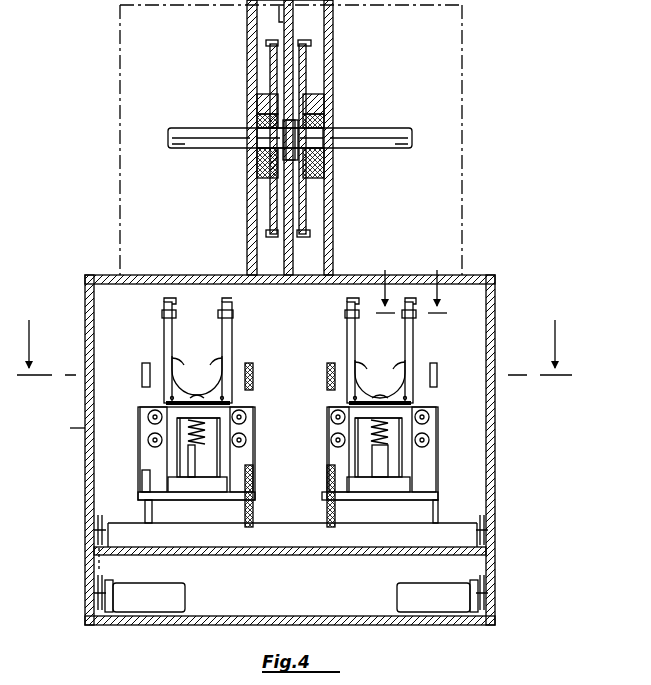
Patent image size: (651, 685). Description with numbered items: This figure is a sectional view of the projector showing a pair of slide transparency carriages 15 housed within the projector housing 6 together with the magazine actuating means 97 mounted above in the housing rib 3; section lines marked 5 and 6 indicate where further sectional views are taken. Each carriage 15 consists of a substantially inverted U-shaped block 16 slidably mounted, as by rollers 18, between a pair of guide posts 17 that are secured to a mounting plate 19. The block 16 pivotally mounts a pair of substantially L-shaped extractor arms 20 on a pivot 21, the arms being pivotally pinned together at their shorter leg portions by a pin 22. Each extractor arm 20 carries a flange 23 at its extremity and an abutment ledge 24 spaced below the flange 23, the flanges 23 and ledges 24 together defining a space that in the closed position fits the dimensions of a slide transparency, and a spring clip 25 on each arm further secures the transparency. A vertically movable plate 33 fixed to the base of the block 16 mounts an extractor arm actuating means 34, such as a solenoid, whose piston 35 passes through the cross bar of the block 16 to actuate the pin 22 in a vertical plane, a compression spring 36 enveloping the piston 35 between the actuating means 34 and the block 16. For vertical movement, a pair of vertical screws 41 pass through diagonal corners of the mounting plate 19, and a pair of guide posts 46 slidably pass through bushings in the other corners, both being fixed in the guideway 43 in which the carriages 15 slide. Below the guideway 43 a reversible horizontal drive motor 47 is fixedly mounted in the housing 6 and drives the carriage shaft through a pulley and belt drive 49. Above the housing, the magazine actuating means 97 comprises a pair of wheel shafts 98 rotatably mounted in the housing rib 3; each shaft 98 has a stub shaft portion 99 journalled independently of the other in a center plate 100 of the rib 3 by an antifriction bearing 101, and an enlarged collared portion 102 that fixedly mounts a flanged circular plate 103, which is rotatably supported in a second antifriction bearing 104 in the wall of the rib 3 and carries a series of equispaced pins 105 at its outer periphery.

The housing rib 3 is at (332, 36).
The section line 5- 5 is at (294, 338).
The housing 6 is at (250, 340).
The slide transparency carriage 15 is at (133, 347).
The U-shaped block 16 is at (177, 461).
The guide posts 17 is at (143, 441).
The rollers 18 is at (148, 440).
The mounting plate 19 is at (138, 496).
The extractor arms 20 is at (164, 343).
The pivot 21 is at (168, 399).
The pin 22 is at (200, 396).
The flange 23 is at (194, 298).
The abutment ledge 24 is at (214, 366).
The spring clip 25 is at (233, 313).
The vertically movable plate 33 is at (227, 481).
The extractor arm actuating means 34 is at (193, 475).
The piston 35 is at (205, 436).
The compression spring 36 is at (214, 418).
The vertical screws 41 is at (253, 512).
The guideway 43 is at (311, 540).
The guide posts 46 is at (145, 511).
The reversible horizontal drive motor 47 is at (185, 584).
The pulley and belt drive 49 is at (109, 572).
The magazine actuating means 97 is at (301, 137).
The wheel shafts 98 is at (196, 127).
The stub shaft portion 99 is at (260, 150).
The center plate 100 is at (279, 20).
The antifriction bearing 101 is at (297, 130).
The enlarged collared portion 102 is at (262, 134).
The circular plate 103 is at (296, 62).
The second antifriction bearing 104 is at (257, 106).
The pins 105 is at (302, 42).